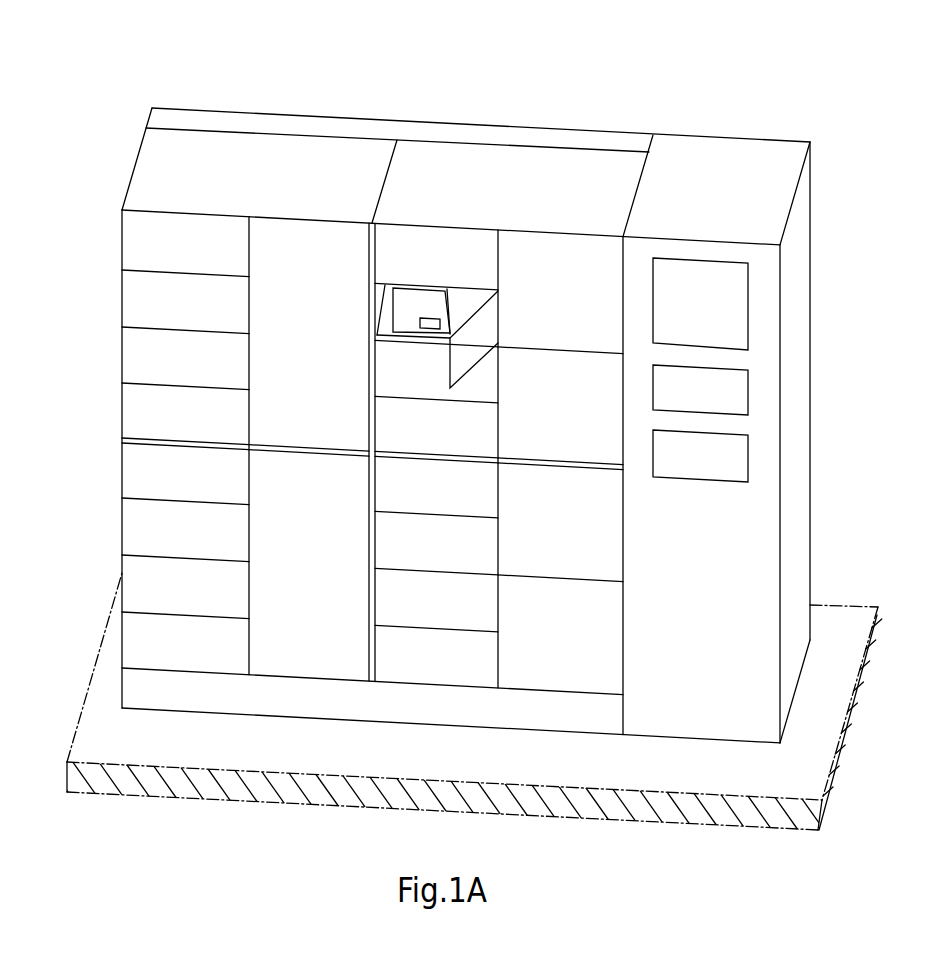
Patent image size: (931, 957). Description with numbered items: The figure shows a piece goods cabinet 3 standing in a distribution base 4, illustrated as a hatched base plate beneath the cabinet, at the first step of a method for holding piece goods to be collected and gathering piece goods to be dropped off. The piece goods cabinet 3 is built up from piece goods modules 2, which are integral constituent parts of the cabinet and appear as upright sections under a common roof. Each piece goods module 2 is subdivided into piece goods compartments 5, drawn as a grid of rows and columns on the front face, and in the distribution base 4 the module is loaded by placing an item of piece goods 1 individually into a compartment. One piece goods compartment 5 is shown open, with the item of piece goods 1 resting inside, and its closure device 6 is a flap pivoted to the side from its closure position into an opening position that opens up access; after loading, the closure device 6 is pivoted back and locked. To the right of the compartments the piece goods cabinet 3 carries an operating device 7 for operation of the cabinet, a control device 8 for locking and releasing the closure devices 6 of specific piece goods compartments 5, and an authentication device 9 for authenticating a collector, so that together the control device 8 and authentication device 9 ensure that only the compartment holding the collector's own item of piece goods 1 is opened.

The piece goods 1 is at (408, 310).
The piece goods module 2 is at (220, 163).
The piece goods cabinet 3 is at (319, 101).
The distribution base 4 is at (310, 807).
The piece goods compartments 5 is at (468, 302).
The closure devices 6 is at (483, 328).
The operating device 7 is at (732, 310).
The control device 8 is at (725, 392).
The authentication device 9 is at (728, 455).